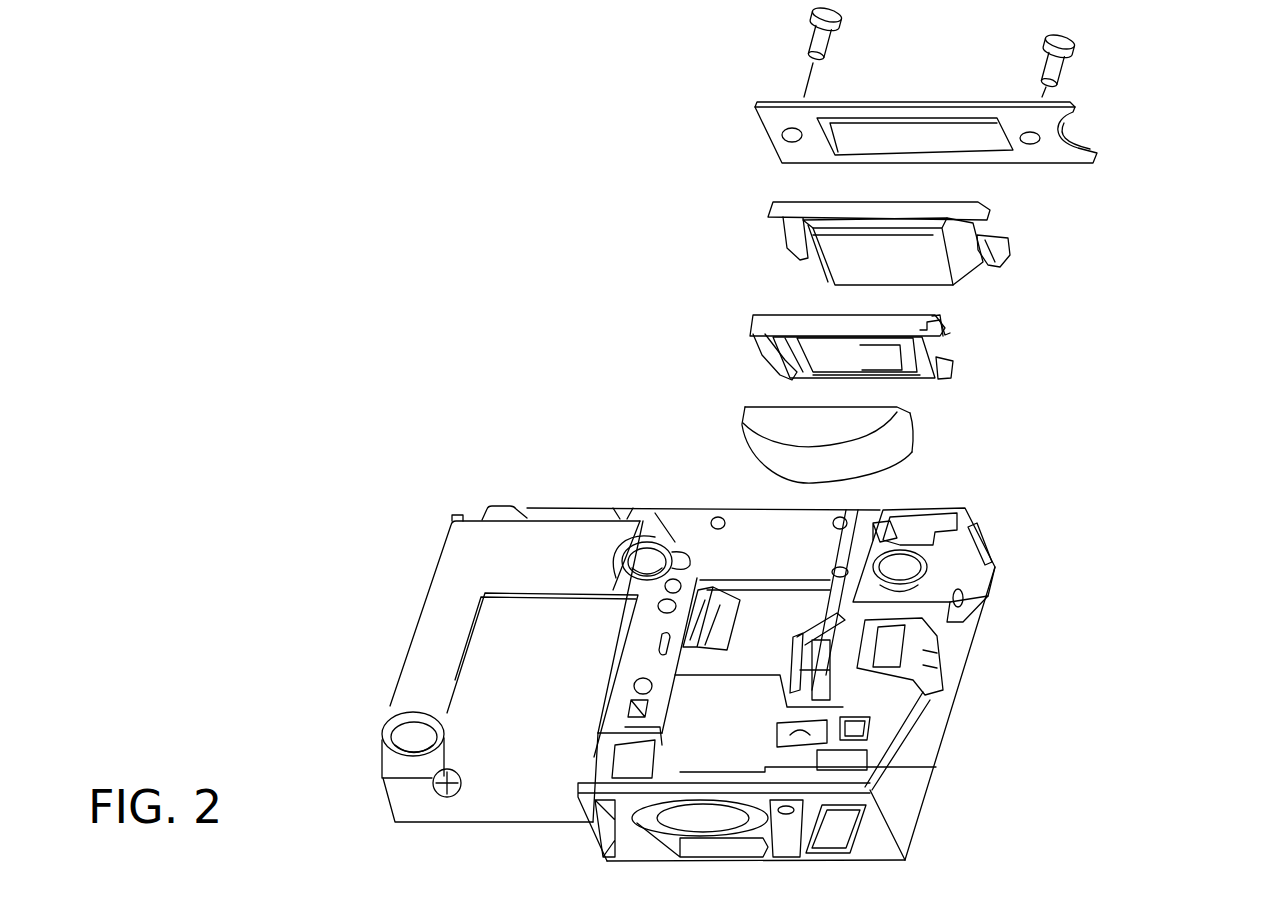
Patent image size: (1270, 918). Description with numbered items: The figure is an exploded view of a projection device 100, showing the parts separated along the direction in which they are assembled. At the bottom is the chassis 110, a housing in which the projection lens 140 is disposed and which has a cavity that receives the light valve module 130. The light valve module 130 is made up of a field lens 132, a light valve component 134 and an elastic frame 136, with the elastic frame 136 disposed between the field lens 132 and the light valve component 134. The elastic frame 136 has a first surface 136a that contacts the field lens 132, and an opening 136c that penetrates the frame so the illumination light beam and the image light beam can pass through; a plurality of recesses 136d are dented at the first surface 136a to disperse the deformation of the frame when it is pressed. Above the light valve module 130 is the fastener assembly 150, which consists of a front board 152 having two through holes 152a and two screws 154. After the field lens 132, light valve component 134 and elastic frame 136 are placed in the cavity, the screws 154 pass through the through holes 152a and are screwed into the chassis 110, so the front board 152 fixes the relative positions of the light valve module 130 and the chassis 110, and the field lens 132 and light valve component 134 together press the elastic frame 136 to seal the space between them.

The projection device 100 is at (766, 433).
The chassis 110 is at (639, 677).
The light valve module 130 is at (962, 344).
The field lens 132 is at (931, 446).
The light valve component 134 is at (944, 243).
The elastic frame 136 is at (937, 370).
The first surface 136a is at (999, 395).
The opening 136c is at (960, 338).
The recesses 136d is at (991, 349).
The projection lens 140 is at (525, 735).
The fastener assembly 150 is at (1002, 117).
The front board 152 is at (973, 165).
The through holes 152a is at (1076, 180).
The screws 154 is at (996, 51).